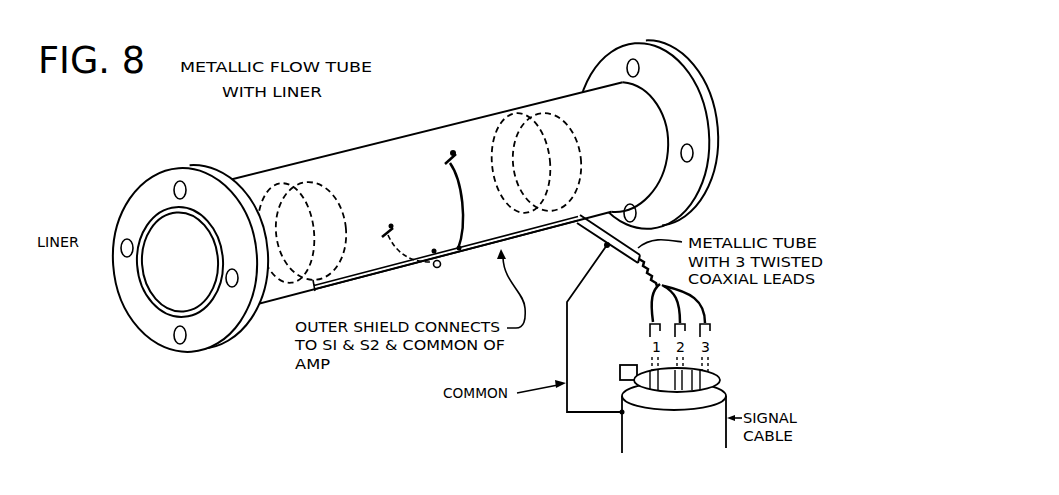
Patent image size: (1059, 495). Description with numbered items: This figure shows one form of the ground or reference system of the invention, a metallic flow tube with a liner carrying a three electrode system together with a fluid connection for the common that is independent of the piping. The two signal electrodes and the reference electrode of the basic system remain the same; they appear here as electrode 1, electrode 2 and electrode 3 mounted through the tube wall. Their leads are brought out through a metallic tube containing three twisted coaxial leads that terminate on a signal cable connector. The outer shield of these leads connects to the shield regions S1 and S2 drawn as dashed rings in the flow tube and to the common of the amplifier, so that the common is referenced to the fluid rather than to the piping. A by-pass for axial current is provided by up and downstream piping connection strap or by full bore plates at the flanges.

The electrode 1 is at (511, 199).
The electrode 2 is at (360, 233).
The electrode 3 is at (397, 277).
The outer shield S1 is at (302, 232).
The outer shield S2 is at (536, 163).